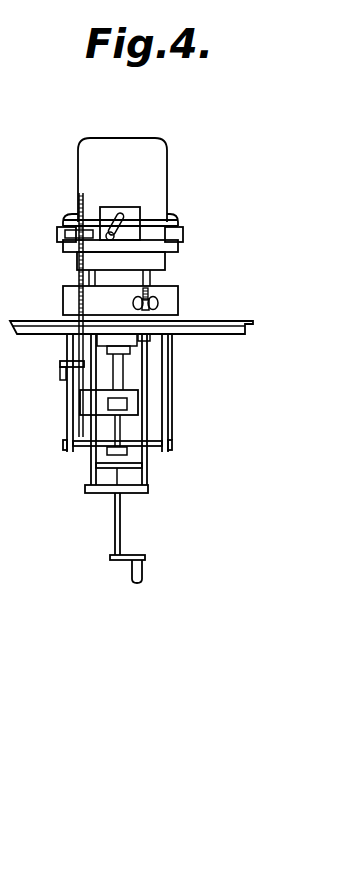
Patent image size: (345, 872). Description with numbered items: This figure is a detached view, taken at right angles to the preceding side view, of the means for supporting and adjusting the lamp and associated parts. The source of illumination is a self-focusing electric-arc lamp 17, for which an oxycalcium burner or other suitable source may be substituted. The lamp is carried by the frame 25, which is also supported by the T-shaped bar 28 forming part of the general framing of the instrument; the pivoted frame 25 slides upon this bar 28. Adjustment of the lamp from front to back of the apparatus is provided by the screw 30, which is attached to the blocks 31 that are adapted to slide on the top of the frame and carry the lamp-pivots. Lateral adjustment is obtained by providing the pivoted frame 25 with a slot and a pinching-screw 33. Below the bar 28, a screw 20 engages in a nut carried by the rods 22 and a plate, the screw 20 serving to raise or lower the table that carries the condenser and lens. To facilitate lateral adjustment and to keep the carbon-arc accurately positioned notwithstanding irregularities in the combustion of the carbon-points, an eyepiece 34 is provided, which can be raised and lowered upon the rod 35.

The self-focusing electric-arc lamp 17 is at (120, 182).
The screw 30 is at (126, 224).
The blocks 31 is at (57, 234).
The frame 25 is at (120, 300).
The pinching-screw 33 is at (160, 305).
The T-shaped bar 28 is at (228, 335).
The rods 22 is at (168, 393).
The eyepiece 34 is at (109, 404).
The rod 35 is at (84, 382).
The screw 20 is at (120, 522).